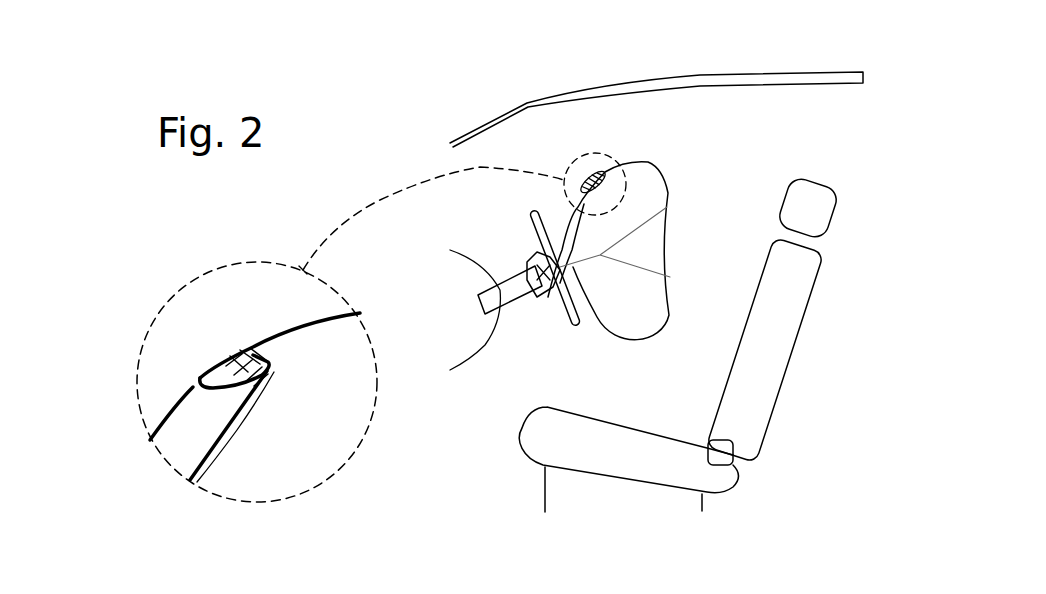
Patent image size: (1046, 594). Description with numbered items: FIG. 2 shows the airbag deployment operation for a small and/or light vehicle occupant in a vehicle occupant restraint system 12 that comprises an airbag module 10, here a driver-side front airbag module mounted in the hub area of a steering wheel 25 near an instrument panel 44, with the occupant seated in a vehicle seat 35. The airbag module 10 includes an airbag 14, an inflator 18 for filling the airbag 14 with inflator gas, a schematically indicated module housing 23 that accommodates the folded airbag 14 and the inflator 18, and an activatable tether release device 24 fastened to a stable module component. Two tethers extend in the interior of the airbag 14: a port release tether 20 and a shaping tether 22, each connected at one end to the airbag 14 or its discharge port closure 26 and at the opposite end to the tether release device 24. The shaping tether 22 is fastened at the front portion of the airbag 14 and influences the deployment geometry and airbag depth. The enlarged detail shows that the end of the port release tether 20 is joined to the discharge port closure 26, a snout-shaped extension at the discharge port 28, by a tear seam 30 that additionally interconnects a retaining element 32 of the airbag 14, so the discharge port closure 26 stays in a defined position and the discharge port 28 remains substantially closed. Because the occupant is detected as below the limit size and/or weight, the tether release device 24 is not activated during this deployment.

The airbag module 10 is at (551, 312).
The vehicle occupant restraint system 12 is at (752, 138).
The airbag 14 is at (287, 315).
The inflator 18 is at (525, 263).
The port release tether 20 is at (584, 204).
The shaping tether 22 is at (597, 258).
The module housing 23 is at (527, 250).
The tether release device 24 is at (547, 287).
The steering wheel 25 is at (540, 257).
The discharge port closure 26 is at (207, 388).
The discharge port 28 is at (188, 381).
The tear seam 30 is at (248, 410).
The retaining element 32 is at (230, 350).
The vehicle seat 35 is at (790, 280).
The instrument panel 44 is at (442, 345).